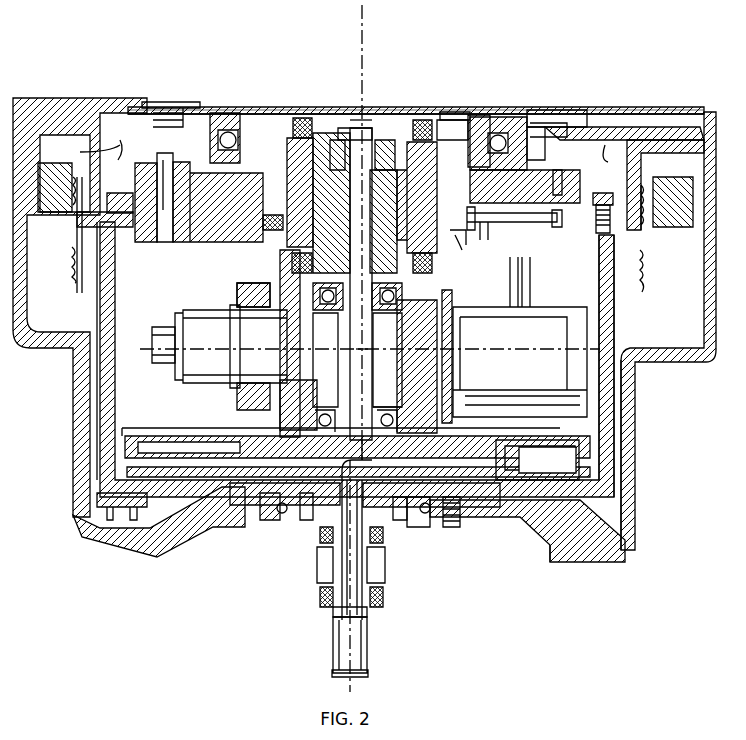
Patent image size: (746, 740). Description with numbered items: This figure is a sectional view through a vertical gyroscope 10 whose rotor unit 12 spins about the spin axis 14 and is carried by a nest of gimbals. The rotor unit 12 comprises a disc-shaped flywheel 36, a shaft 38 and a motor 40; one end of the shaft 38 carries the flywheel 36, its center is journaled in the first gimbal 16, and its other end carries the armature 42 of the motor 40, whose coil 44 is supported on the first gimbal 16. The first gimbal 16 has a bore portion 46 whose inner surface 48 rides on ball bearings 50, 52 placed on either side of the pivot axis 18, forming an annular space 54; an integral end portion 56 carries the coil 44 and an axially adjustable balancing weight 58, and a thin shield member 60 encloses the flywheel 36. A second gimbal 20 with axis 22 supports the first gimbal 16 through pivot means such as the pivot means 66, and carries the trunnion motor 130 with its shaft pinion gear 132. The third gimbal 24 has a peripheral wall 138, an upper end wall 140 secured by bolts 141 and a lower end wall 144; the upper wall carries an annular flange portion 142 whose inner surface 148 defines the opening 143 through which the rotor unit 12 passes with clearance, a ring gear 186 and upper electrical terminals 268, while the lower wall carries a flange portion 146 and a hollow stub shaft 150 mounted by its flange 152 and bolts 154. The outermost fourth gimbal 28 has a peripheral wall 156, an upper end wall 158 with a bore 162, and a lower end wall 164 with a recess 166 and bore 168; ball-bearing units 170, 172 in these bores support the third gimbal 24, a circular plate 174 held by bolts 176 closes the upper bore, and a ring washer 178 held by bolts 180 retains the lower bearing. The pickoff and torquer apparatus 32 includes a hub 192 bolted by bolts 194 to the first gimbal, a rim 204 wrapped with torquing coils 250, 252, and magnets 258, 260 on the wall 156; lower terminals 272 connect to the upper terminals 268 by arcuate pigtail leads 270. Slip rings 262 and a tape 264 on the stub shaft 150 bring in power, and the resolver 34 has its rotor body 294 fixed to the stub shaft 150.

The gyroscope 10 is at (676, 106).
The rotor unit 12 is at (346, 402).
The spin axis 14 is at (366, 48).
The first gimbal 16 is at (282, 276).
The pivot axis 18 is at (366, 348).
The second gimbal 20 is at (253, 346).
The second gimbal axis 22 is at (150, 349).
The third gimbal or casing 24 is at (621, 340).
The fourth gimbal 28 is at (640, 130).
The pickoff and torquer apparatus 32 is at (142, 140).
The resolver 34 is at (380, 610).
The flywheel 36 is at (328, 456).
The shaft 38 is at (386, 396).
The motor 40 is at (412, 128).
The armature 42 is at (378, 222).
The coil 44 is at (411, 209).
The peripheral wall or bore portion 46 is at (409, 366).
The radially inner surface 48 is at (388, 360).
The ball bearing 50 is at (338, 302).
The ball bearing 52 is at (334, 426).
The annular space 54 is at (315, 396).
The end portion 56 is at (283, 176).
The balancing weight 58 is at (276, 115).
The shield member 60 is at (128, 428).
The pivot means 66 is at (249, 342).
The motor 130 is at (527, 381).
The shaft pinion gear 132 is at (516, 291).
The peripheral wall 138 is at (612, 318).
The upper end wall 140 is at (500, 196).
The bolts 141 is at (603, 195).
The annular flange portion 142 is at (478, 116).
The opening 143 is at (440, 112).
The lower end wall 144 is at (575, 498).
The annular flange portion 146 is at (356, 476).
The radially inner surface 148 is at (465, 118).
The stub shaft 150 is at (370, 640).
The flange portion 152 is at (397, 522).
The bolts 154 is at (410, 530).
The peripheral wall 156 is at (634, 428).
The upper end wall 158 is at (596, 126).
The bore 162 is at (537, 150).
The lower end wall 164 is at (600, 562).
The recess 166 is at (548, 562).
The bore 168 is at (426, 520).
The anti-friction ball-bearing unit 170 is at (500, 130).
The anti-friction ball-bearing unit 172 is at (303, 522).
The circular plate 174 is at (322, 108).
The bolts 176 is at (153, 102).
The ring washer 178 is at (262, 518).
The bolts 180 is at (272, 525).
The ring gear 186 is at (615, 122).
The hub portion 192 is at (463, 246).
The bolts 194 is at (275, 214).
The rim 204 is at (80, 237).
The torquing coil 250 is at (78, 216).
The torquing coil 252 is at (74, 266).
The magnet 258 is at (38, 192).
The magnet 260 is at (655, 207).
The slip rings 262 is at (340, 655).
The tape 264 is at (100, 306).
The upper electrical terminals 268 is at (553, 172).
The arcuate pigtail leads 270 is at (530, 228).
The lower terminals 272 is at (495, 247).
The rotor body 294 is at (385, 598).